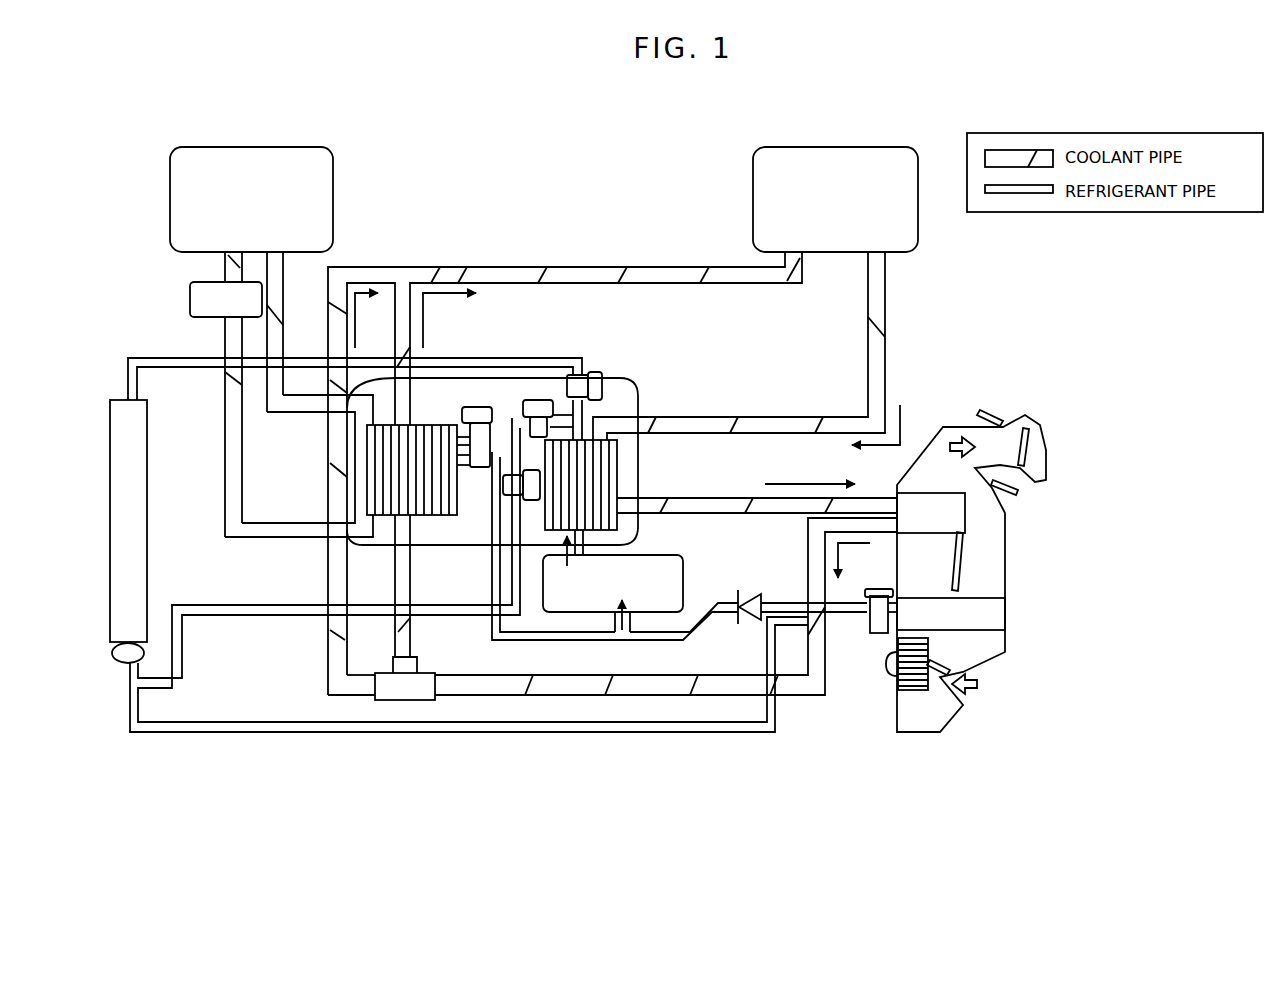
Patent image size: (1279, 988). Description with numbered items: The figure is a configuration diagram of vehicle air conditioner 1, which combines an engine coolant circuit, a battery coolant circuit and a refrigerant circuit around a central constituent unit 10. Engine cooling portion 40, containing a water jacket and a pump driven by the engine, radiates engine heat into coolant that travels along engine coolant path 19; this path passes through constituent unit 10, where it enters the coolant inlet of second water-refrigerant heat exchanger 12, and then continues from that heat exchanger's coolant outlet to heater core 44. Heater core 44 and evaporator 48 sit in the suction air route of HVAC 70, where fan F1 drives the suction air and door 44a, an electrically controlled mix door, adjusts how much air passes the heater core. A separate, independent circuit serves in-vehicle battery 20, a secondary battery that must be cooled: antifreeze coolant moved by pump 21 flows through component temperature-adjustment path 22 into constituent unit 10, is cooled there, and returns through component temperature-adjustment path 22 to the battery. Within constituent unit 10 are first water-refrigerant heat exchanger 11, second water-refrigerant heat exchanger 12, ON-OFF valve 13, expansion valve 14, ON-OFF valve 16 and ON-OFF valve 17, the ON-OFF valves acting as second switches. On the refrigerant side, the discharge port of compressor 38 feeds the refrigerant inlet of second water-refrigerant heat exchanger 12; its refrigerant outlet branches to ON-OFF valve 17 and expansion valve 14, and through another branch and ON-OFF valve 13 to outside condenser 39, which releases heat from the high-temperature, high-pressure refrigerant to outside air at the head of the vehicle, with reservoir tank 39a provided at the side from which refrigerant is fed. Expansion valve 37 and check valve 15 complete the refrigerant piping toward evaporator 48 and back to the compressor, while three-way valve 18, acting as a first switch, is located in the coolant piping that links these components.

The vehicle air conditioner 1 is at (600, 196).
The constituent unit 10 is at (638, 380).
The first water-refrigerant heat exchanger 11 is at (437, 517).
The second water-refrigerant heat exchanger 12 is at (617, 456).
The ON-OFF valve 13 is at (598, 372).
The expansion valve 14 is at (477, 407).
The check valve 15 is at (749, 622).
The ON-OFF valve 16 is at (503, 488).
The ON-OFF valve 17 is at (540, 400).
The three-way valve 18 is at (403, 702).
The engine coolant path 19 is at (428, 267).
The in-vehicle battery 20 is at (170, 201).
The pump 21 is at (190, 300).
The component temperature-adjustment path 22 is at (228, 526).
The expansion valve 37 is at (870, 640).
The compressor 38 is at (685, 578).
The outside condenser 39 is at (110, 616).
The reservoir tank 39a is at (118, 663).
The engine cooling portion 40 is at (753, 201).
The heater core 44 is at (927, 493).
The door 44a is at (965, 565).
The evaporator 48 is at (1005, 624).
The HVAC 70 is at (1005, 527).
The fan F1 is at (912, 692).